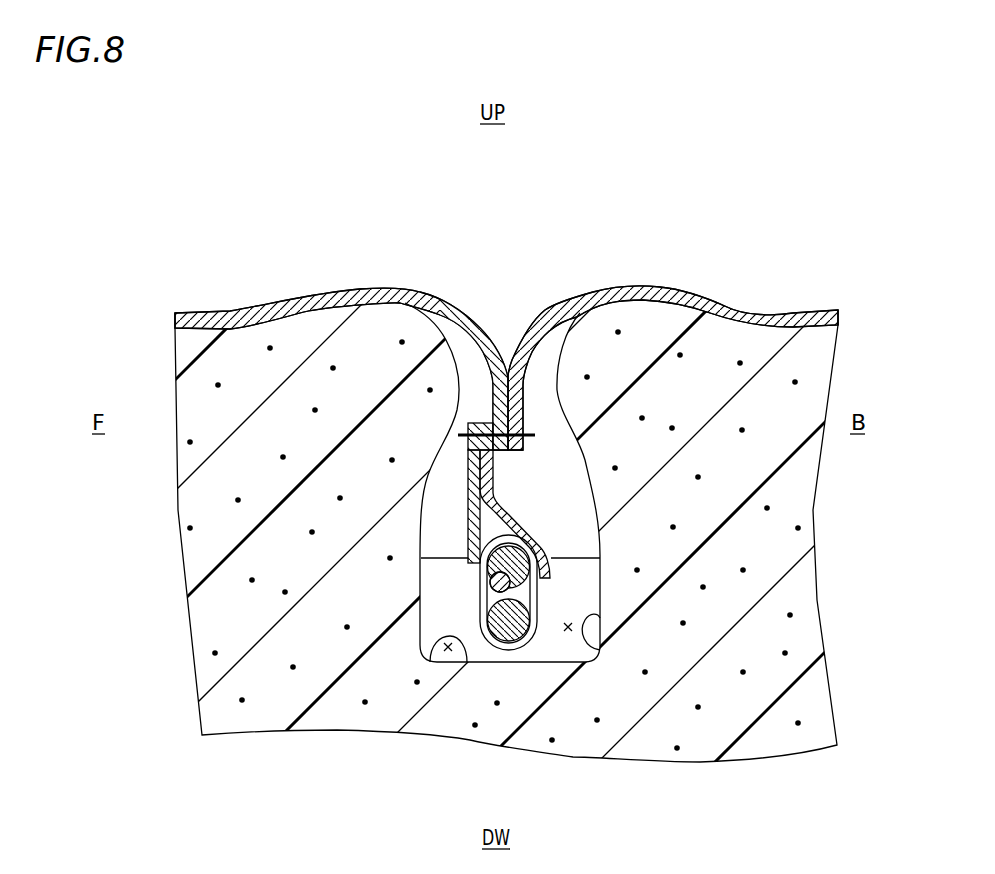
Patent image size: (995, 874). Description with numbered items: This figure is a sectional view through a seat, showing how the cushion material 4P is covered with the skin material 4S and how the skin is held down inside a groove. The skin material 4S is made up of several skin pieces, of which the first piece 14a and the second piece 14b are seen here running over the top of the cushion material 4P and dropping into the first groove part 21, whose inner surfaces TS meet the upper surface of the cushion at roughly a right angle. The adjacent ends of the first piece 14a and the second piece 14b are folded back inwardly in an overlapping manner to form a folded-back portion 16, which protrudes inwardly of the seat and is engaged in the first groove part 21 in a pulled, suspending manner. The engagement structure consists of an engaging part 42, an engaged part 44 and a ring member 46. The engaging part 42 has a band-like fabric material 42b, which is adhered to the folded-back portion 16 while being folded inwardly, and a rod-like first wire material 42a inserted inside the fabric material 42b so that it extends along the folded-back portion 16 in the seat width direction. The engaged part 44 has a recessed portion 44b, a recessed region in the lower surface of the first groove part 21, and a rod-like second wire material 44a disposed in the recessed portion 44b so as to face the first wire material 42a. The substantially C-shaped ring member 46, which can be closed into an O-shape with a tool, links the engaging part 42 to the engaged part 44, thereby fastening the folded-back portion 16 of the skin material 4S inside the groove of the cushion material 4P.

The cushion material 4P is at (783, 490).
The skin material 4S is at (506, 295).
The first piece 14a is at (355, 290).
The second piece 14b is at (557, 317).
The folded-back portion 16 is at (525, 448).
The engaging part 42 is at (297, 500).
The first wire material 42a is at (86, 495).
The fabric material 42b is at (468, 515).
The ring member 46 is at (480, 607).
The engaged part 44 is at (326, 636).
The second wire material 44a is at (348, 620).
The recessed portion 44b is at (96, 657).
The first groove part 21 is at (568, 633).
The inner surface TS is at (464, 663).